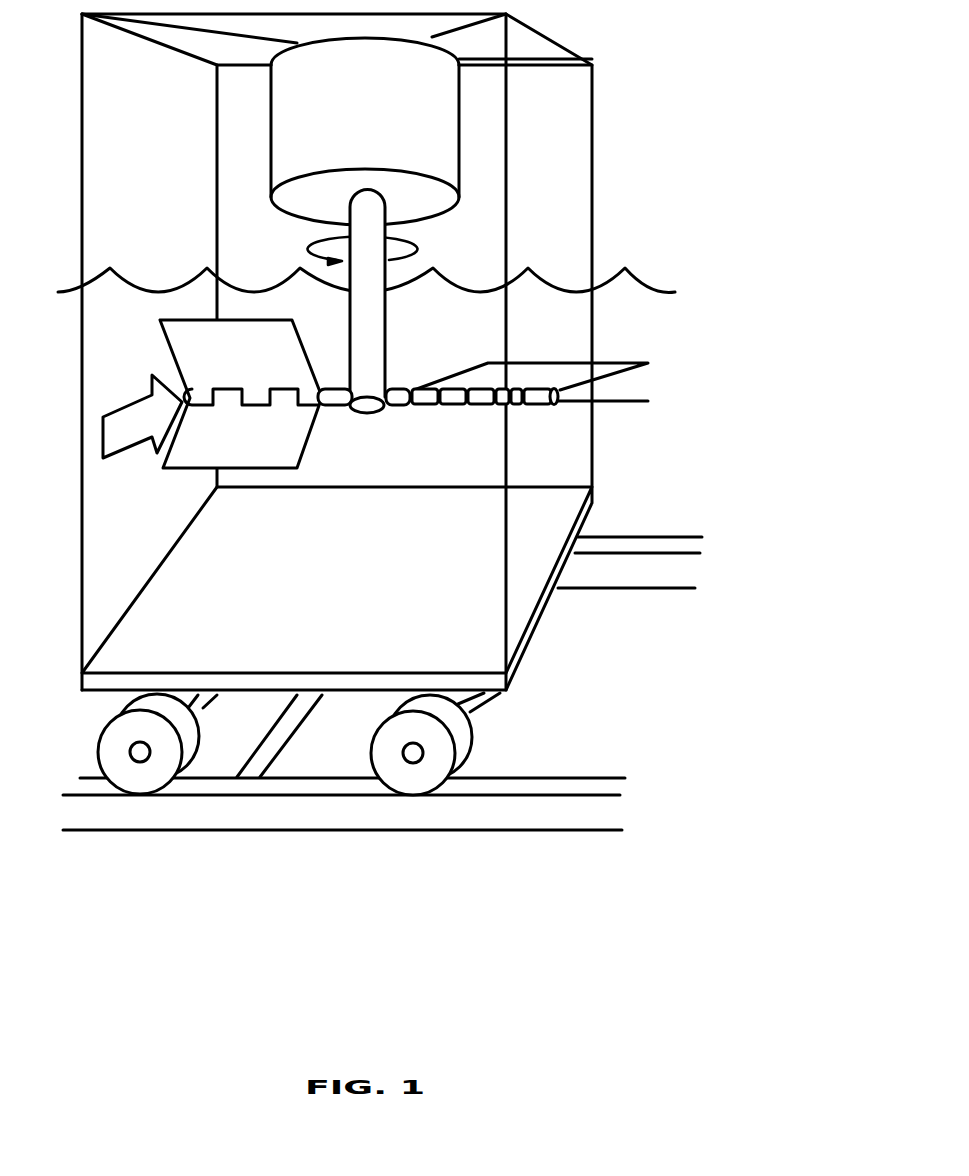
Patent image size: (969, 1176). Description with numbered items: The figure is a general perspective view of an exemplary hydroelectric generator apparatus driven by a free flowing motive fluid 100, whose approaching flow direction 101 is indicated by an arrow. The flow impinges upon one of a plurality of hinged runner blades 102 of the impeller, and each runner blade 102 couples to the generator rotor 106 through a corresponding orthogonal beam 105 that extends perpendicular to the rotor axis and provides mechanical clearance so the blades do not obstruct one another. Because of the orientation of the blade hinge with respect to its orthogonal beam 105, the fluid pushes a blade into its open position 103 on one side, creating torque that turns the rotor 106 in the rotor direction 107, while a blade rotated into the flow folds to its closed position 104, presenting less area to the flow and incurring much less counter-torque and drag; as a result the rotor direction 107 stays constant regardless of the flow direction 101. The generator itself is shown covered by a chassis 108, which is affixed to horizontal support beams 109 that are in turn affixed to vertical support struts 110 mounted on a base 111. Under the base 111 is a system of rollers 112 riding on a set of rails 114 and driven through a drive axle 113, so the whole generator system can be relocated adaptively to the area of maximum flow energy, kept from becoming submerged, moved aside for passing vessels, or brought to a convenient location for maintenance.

The free flowing motive fluid 100 is at (353, 280).
The direction of flow 101 is at (144, 436).
The runner blade 102 is at (263, 440).
The open position 103 is at (237, 389).
The closed position 104 is at (522, 405).
The orthogonal beam 105 is at (398, 407).
The generator rotor 106 is at (387, 340).
The rotor direction of rotation 107 is at (418, 248).
The chassis 108 is at (372, 129).
The horizontal support beam 109 is at (432, 37).
The vertical support strut 110 is at (593, 110).
The base 111 is at (373, 592).
The rollers 112 is at (198, 727).
The drive axle 113 is at (280, 752).
The rails 114 is at (700, 553).